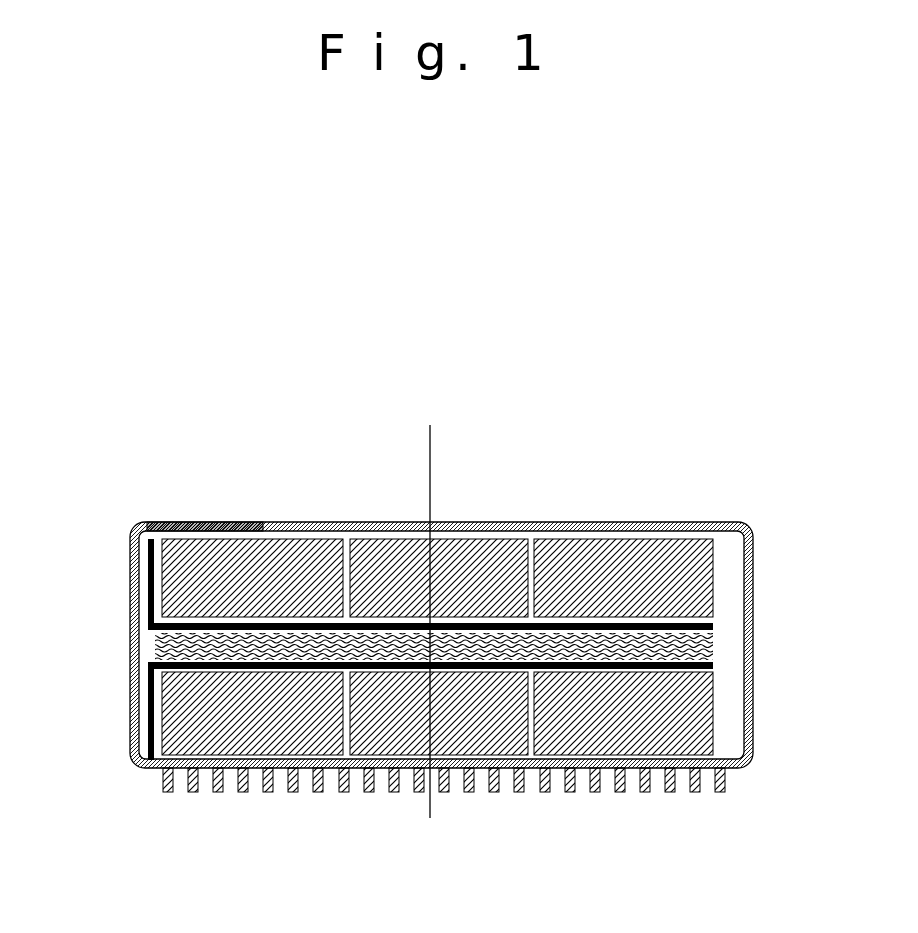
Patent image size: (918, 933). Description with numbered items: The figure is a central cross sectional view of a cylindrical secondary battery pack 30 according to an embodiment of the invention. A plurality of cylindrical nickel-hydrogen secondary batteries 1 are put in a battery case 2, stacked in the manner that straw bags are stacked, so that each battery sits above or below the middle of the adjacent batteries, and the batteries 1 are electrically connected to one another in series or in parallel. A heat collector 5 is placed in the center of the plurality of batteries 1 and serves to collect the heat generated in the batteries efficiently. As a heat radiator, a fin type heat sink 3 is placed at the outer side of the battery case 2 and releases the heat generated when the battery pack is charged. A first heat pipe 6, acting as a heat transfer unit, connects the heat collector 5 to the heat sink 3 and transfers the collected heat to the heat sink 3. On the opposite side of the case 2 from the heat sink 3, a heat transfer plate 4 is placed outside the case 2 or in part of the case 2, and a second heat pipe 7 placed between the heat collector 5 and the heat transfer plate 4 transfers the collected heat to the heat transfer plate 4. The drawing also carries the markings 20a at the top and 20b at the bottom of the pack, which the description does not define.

The nickel-hydrogen secondary batteries 1 is at (595, 553).
The battery case 2 is at (750, 620).
The fin type heat sink 3 is at (218, 790).
The heat transfer plate 4 is at (208, 523).
The heat collector 5 is at (712, 647).
The first heat pipe 6 is at (153, 717).
The second heat pipe 7 is at (150, 593).
The upper portion 20a is at (435, 502).
The lower portion 20b is at (448, 770).
The battery pack 30 is at (513, 523).